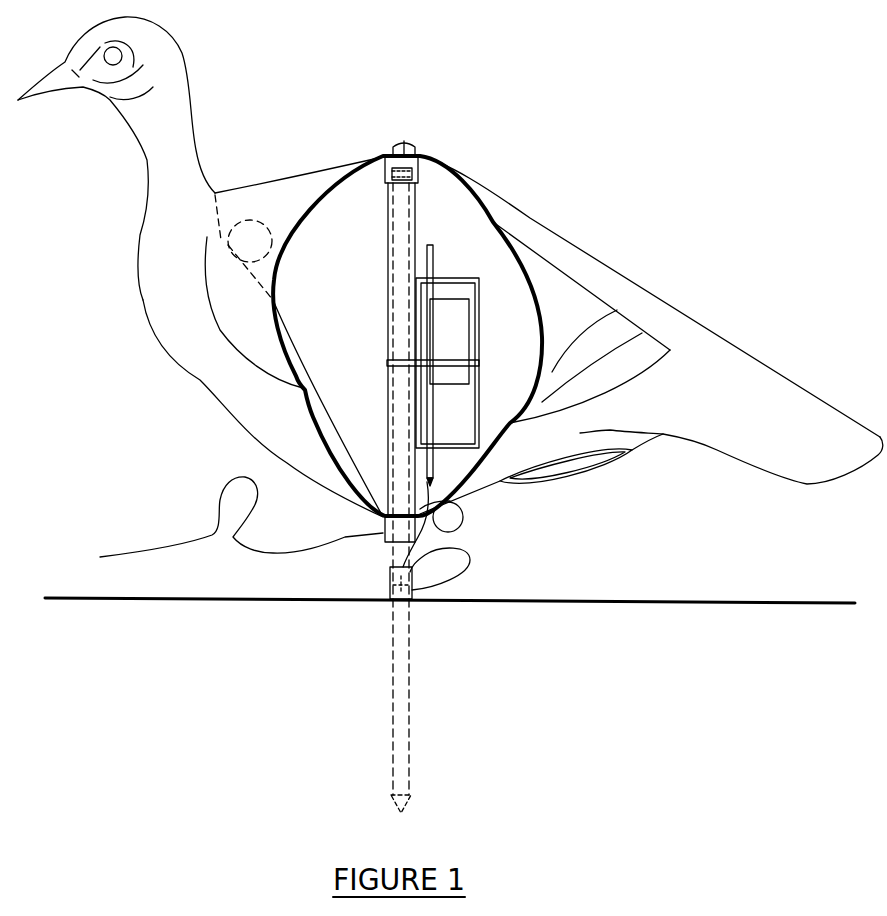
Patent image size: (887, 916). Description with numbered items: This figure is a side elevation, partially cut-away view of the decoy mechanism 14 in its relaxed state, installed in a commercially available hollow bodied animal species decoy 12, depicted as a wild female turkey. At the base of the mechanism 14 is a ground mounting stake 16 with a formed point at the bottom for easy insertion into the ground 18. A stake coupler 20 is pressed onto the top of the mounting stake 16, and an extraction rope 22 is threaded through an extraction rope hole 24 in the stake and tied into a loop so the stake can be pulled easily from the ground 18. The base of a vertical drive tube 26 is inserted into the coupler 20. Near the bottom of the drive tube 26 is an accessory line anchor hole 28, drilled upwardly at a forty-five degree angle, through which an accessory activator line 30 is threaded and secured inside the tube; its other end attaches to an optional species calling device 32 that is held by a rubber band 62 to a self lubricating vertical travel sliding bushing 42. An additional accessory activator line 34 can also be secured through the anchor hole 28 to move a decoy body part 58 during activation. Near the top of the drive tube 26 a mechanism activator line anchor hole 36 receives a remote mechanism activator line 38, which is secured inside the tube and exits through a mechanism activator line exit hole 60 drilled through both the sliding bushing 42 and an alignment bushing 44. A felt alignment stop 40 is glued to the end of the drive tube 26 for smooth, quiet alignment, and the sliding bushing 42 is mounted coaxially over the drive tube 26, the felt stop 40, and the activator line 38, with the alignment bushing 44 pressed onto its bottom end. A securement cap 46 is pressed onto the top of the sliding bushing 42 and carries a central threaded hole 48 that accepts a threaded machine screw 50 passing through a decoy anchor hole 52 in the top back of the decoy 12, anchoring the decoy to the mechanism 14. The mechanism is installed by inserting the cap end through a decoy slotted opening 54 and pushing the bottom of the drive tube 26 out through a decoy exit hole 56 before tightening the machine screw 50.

The hollow bodied animal species decoy 12 is at (450, 340).
The mechanism 14 is at (424, 212).
The ground mounting stake 16 is at (409, 715).
The ground 18 is at (660, 604).
The stake coupler 20 is at (401, 574).
The extraction rope 22 is at (458, 575).
The extraction rope hole 24 is at (400, 588).
The vertical drive tube 26 is at (391, 550).
The accessory line anchor hole 28 is at (396, 562).
The accessory activator line 30 is at (465, 528).
The species calling device 32 is at (478, 448).
The additional accessory activator line 34 is at (242, 220).
The mechanism activator line anchor hole 36 is at (402, 265).
The remote mechanism activator line 38 is at (163, 547).
The felt alignment stop 40 is at (419, 178).
The self lubricating vertical travel sliding bushing 42 is at (418, 232).
The alignment bushing 44 is at (388, 540).
The securement cap 46 is at (386, 176).
The threaded hole 48 is at (418, 166).
The threaded machine screw 50 is at (410, 146).
The decoy anchor hole 52 is at (398, 146).
The decoy slotted opening 54 is at (548, 465).
The decoy exit hole 56 is at (383, 522).
The decoy body part 58 is at (180, 53).
The mechanism activator line exit hole 60 is at (385, 530).
The rubber band 62 is at (388, 367).